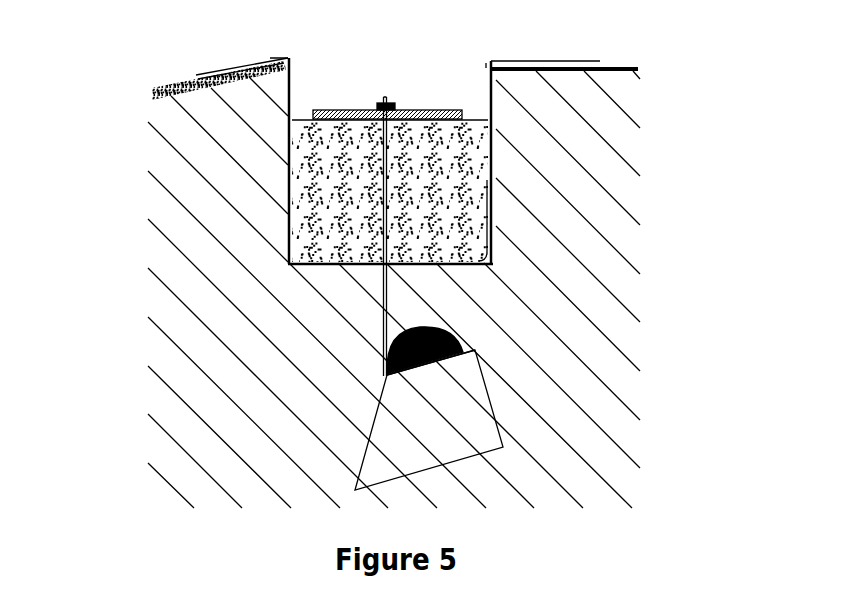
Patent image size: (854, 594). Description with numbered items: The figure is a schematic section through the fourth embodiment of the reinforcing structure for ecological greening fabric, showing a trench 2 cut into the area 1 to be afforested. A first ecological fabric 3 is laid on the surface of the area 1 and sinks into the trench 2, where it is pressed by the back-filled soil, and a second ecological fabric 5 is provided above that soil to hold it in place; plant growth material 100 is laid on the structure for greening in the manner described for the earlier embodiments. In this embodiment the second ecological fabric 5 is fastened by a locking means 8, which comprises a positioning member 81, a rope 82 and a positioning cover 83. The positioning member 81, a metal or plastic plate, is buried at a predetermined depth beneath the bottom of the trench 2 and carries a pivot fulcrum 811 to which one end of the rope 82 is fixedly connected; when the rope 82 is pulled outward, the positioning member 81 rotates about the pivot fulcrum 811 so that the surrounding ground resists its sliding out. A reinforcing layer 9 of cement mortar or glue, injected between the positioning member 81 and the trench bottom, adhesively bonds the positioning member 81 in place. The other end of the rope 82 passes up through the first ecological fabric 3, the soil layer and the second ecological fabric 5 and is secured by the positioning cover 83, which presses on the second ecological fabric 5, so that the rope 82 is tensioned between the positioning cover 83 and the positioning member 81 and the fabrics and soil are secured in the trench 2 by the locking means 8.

The area to be afforested 1 is at (197, 113).
The plant growth material 100 is at (183, 90).
The first ecological fabric 3 is at (196, 112).
The second ecological fabric 5 is at (493, 127).
The trench 2 is at (492, 183).
The locking means 8 is at (333, 109).
The positioning cover 83 is at (417, 110).
The rope 82 is at (383, 300).
The reinforcing layer 9 is at (463, 341).
The positioning member 81 is at (477, 422).
The pivot fulcrum 811 is at (385, 375).